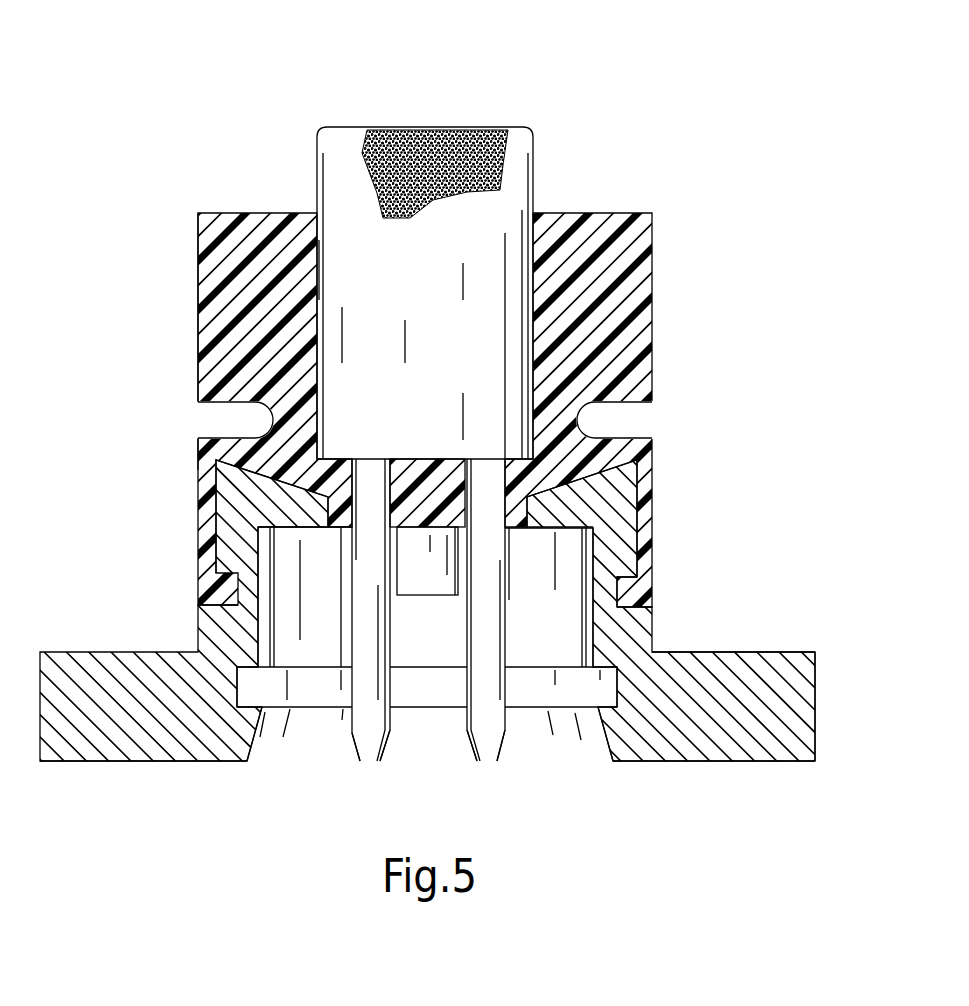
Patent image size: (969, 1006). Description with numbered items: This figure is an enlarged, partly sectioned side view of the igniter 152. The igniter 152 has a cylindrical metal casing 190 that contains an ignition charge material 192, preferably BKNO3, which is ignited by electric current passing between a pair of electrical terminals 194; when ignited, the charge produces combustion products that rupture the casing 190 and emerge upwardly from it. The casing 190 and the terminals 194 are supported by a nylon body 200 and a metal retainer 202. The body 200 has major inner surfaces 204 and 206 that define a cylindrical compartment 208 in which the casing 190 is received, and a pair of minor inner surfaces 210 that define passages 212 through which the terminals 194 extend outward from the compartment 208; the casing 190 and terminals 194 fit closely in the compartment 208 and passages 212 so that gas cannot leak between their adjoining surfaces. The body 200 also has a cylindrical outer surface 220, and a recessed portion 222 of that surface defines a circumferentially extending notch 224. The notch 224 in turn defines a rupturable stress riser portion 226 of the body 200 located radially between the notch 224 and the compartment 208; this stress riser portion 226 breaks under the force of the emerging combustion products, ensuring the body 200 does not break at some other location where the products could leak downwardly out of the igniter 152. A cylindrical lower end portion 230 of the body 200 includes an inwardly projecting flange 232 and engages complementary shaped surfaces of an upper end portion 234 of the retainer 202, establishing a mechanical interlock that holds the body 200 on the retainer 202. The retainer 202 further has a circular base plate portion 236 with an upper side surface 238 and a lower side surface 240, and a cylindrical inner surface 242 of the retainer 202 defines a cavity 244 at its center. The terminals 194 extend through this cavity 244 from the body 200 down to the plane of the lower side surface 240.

The igniter 152 is at (168, 104).
The cylindrical metal casing 190 is at (317, 157).
The ignition charge material 192 is at (437, 160).
The electrical terminals 194 is at (485, 740).
The nylon body 200 is at (188, 274).
The metal retainer 202 is at (100, 640).
The major inner surface 204 is at (320, 273).
The major inner surface 206 is at (423, 459).
The cylindrical compartment 208 is at (490, 221).
The minor inner surfaces 210 is at (367, 527).
The passages 212 is at (365, 450).
The cylindrical outer surface 220 is at (196, 345).
The recessed portion 222 is at (212, 408).
The notch 224 is at (188, 425).
The rupturable stress riser portion 226 is at (555, 415).
The cylindrical lower end portion 230 is at (643, 517).
The inwardly projecting flange 232 is at (630, 573).
The upper end portion 234 is at (240, 500).
The circular base plate portion 236 is at (792, 712).
The upper side surface 238 is at (745, 652).
The lower side surface 240 is at (742, 763).
The cylindrical inner surface 242 is at (568, 653).
The cavity 244 is at (531, 772).